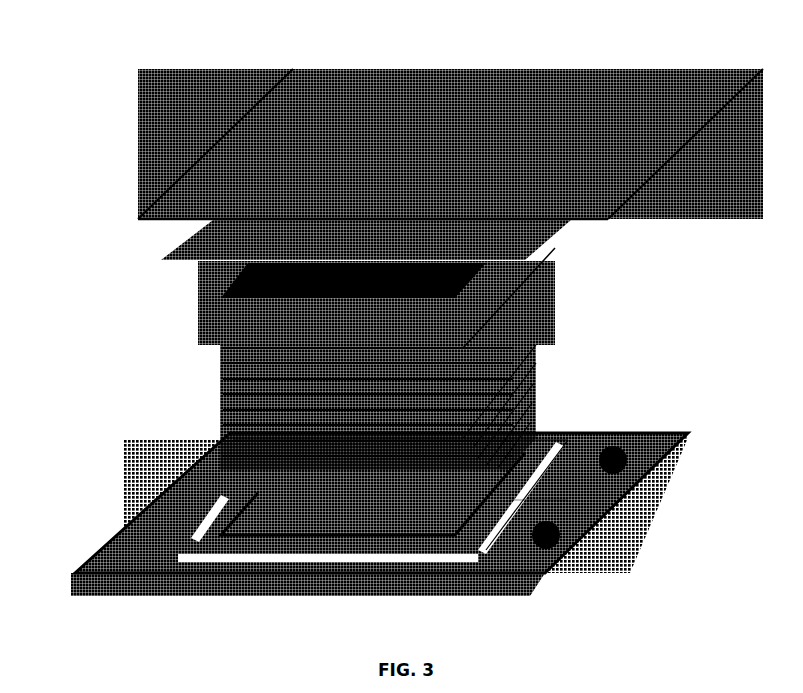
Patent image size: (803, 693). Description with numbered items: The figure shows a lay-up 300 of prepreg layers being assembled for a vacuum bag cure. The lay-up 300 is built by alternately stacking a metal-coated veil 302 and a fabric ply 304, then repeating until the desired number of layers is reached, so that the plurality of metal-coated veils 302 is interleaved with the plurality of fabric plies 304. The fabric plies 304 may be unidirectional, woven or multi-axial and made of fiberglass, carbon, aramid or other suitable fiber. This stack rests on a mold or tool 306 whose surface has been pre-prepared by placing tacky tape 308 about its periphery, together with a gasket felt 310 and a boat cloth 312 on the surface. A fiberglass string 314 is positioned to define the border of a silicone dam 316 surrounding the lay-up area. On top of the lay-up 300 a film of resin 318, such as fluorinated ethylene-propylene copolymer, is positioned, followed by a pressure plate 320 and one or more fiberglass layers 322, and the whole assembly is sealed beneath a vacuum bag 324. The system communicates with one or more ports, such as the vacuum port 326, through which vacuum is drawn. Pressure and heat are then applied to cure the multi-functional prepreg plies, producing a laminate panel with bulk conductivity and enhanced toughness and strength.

The lay-up 300 is at (636, 309).
The metal-coated veil 302 is at (507, 385).
The fabric ply 304 is at (220, 468).
The tool 306 is at (520, 585).
The tacky tape 308 is at (537, 565).
The gasket felt 310 is at (680, 431).
The boat cloth 312 is at (583, 422).
The fiberglass string 314 is at (190, 535).
The silicone dam 316 is at (504, 492).
The film of resin 318 is at (190, 325).
The pressure plate 320 is at (455, 277).
The fiberglass layer 322 is at (190, 239).
The vacuum bag 324 is at (130, 150).
The vacuum port 326 is at (556, 521).